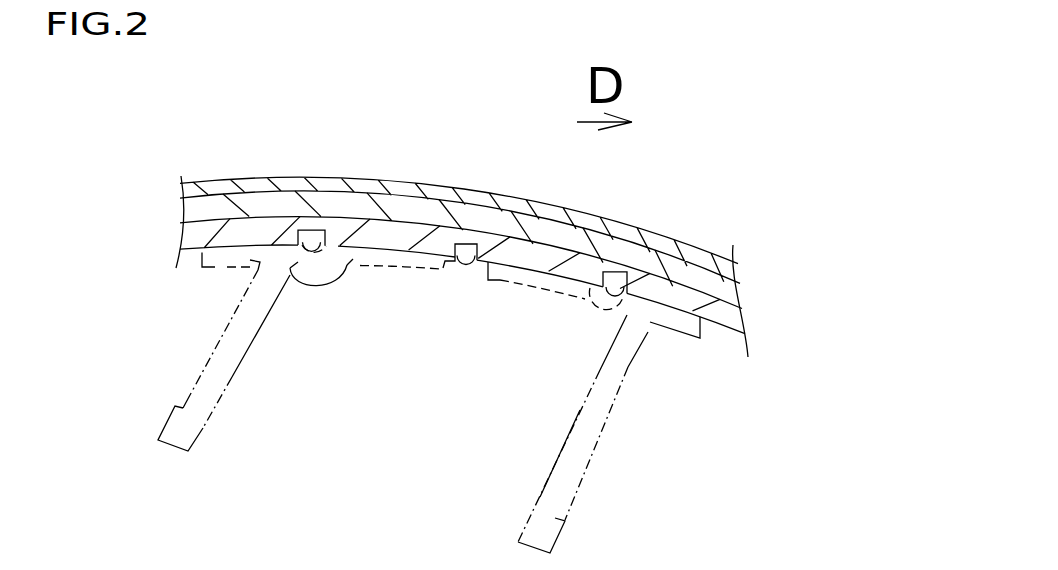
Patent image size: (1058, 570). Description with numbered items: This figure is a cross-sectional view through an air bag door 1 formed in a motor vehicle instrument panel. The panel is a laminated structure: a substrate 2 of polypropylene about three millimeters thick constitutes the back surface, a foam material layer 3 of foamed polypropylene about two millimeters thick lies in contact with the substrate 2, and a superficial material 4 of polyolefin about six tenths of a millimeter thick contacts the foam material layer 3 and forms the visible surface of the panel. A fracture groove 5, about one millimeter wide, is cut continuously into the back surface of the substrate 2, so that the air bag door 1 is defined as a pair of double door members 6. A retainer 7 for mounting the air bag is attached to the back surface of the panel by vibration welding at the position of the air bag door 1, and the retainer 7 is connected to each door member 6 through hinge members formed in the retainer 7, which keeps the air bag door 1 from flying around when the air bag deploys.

The air bag door 1 is at (453, 166).
The substrate 2 is at (726, 323).
The foam material layer 3 is at (727, 288).
The superficial material 4 is at (738, 263).
The fracture groove 5 is at (316, 237).
The door member 6 is at (392, 249).
The retainer 7 is at (222, 398).